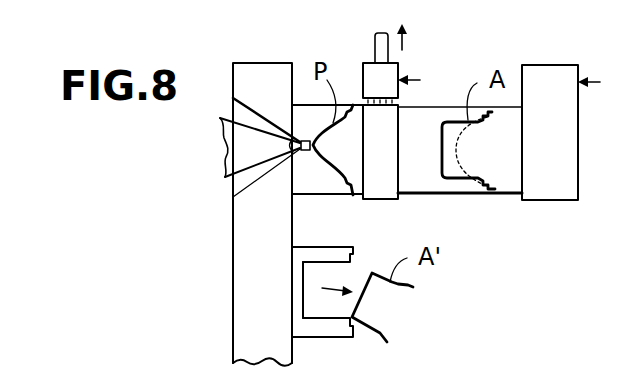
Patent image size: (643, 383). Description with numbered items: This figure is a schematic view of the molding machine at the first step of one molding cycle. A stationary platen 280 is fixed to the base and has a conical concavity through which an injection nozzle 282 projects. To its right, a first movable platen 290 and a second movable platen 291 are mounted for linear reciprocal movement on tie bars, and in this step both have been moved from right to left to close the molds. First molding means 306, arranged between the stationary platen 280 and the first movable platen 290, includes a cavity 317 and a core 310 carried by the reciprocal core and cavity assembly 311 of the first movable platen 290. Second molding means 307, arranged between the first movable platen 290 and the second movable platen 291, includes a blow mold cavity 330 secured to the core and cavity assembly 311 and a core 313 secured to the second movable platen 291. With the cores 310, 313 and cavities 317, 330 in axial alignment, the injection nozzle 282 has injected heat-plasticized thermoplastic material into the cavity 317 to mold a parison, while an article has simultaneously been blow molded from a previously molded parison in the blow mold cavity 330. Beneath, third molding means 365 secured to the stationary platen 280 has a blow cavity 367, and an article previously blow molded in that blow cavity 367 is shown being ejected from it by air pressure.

The stationary platen 280 is at (270, 246).
The injection nozzle 282 is at (239, 143).
The first movable platen 290 is at (373, 72).
The second movable platen 291 is at (560, 110).
The first molding means 306 is at (341, 200).
The second molding means 307 is at (475, 203).
The core 310 is at (351, 161).
The reciprocal core and cavity assembly 311 is at (394, 159).
The core 313 is at (497, 162).
The cavity 317 is at (330, 165).
The blow mold cavity 330 is at (440, 129).
The third molding means 365 is at (312, 339).
The blow cavity 367 is at (301, 281).